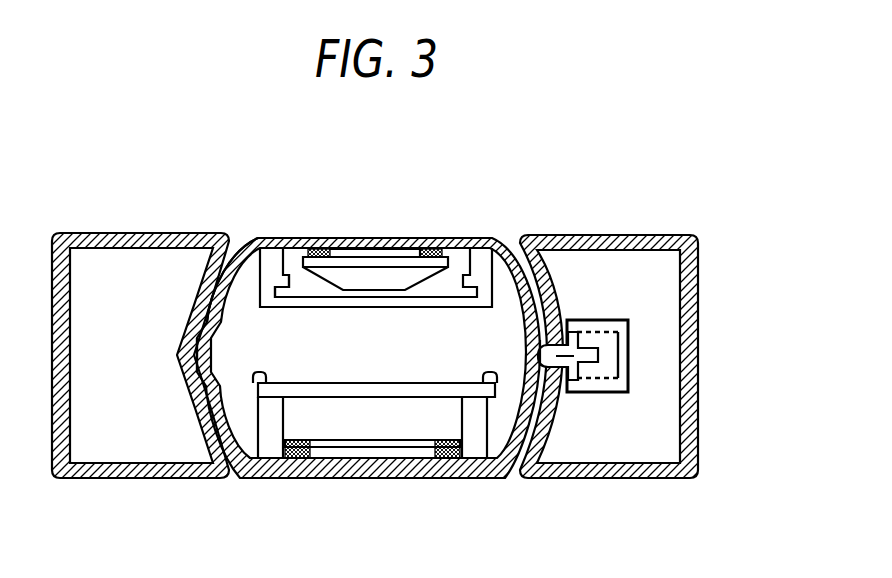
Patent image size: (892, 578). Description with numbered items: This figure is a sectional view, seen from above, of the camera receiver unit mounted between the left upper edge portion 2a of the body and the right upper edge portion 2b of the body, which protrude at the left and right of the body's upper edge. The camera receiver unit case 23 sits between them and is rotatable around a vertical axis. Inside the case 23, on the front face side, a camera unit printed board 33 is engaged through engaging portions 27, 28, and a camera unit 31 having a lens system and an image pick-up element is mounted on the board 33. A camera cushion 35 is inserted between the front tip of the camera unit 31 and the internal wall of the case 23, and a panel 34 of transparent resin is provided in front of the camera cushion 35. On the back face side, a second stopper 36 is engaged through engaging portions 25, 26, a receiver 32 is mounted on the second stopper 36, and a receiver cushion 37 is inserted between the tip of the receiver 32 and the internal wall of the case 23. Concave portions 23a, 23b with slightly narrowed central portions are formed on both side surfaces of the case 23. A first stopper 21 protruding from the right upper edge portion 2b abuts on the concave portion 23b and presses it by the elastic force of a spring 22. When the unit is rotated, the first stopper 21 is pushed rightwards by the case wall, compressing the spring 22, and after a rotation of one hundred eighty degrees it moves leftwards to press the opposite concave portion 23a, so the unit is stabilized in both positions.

The left upper edge portion of the body 2a is at (127, 233).
The right upper edge portion of the body 2b is at (697, 358).
The first stopper 21 is at (592, 357).
The spring 22 is at (608, 357).
The camera receiver unit case 23 is at (494, 240).
The concave portion 23a is at (208, 352).
The concave portion 23b is at (570, 328).
The engaging portion 25 is at (267, 270).
The engaging portion 26 is at (473, 288).
The engaging portion 27 is at (256, 396).
The engaging portion 28 is at (367, 478).
The camera unit 31 is at (413, 427).
The receiver 32 is at (376, 270).
The camera unit printed board 33 is at (473, 392).
The panel 34 is at (322, 447).
The camera cushion 35 is at (293, 458).
The second stopper 36 is at (311, 302).
The receiver cushion 37 is at (316, 249).